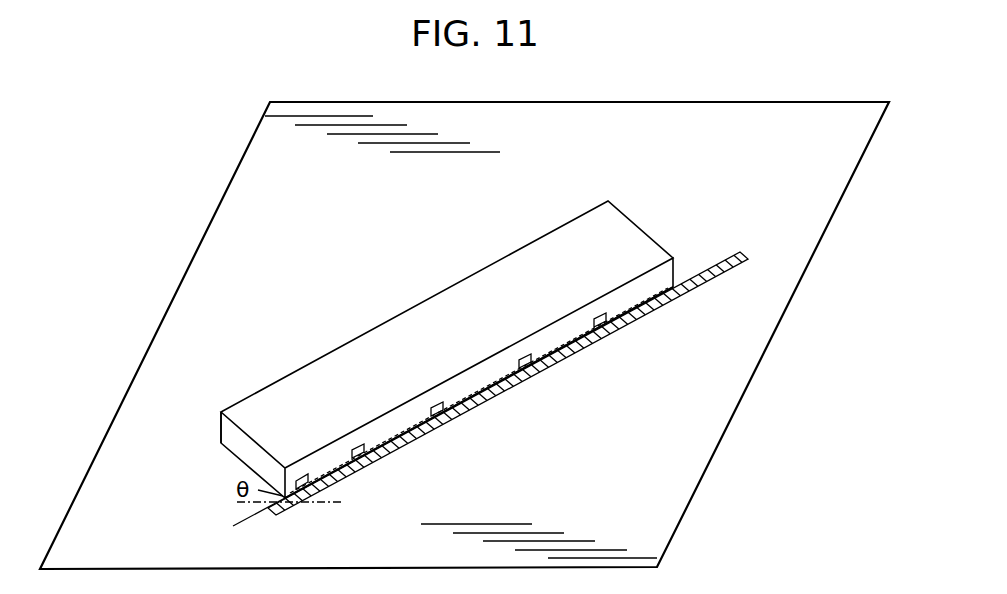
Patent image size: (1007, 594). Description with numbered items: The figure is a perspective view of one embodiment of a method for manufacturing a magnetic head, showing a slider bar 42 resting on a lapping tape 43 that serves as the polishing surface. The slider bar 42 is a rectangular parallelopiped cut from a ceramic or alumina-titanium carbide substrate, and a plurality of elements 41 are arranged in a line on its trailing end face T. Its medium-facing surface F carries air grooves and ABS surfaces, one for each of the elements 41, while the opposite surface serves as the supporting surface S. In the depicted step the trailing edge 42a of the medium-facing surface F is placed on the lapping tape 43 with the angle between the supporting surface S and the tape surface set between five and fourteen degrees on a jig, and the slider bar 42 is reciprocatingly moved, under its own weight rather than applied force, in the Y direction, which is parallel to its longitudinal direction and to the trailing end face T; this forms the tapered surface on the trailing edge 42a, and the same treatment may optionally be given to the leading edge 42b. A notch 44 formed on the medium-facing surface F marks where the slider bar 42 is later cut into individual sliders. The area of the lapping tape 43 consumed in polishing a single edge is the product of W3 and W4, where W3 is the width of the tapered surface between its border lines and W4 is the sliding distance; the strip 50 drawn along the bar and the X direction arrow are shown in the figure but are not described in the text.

The elements 41 is at (300, 445).
The slider bar 42 is at (597, 240).
The trailing edge 42a is at (398, 449).
The leading edge 42b is at (221, 441).
The lapping tape 43 is at (663, 461).
The notch 44 is at (342, 432).
The tape 50 is at (710, 257).
The medium-facing surface F is at (227, 458).
The supporting surface S is at (403, 345).
The trailing end face T is at (514, 368).
The X direction X is at (782, 236).
The Y direction Y is at (383, 200).
The width of the tapered surface W3 is at (340, 517).
The distance of sliding W4 is at (318, 508).